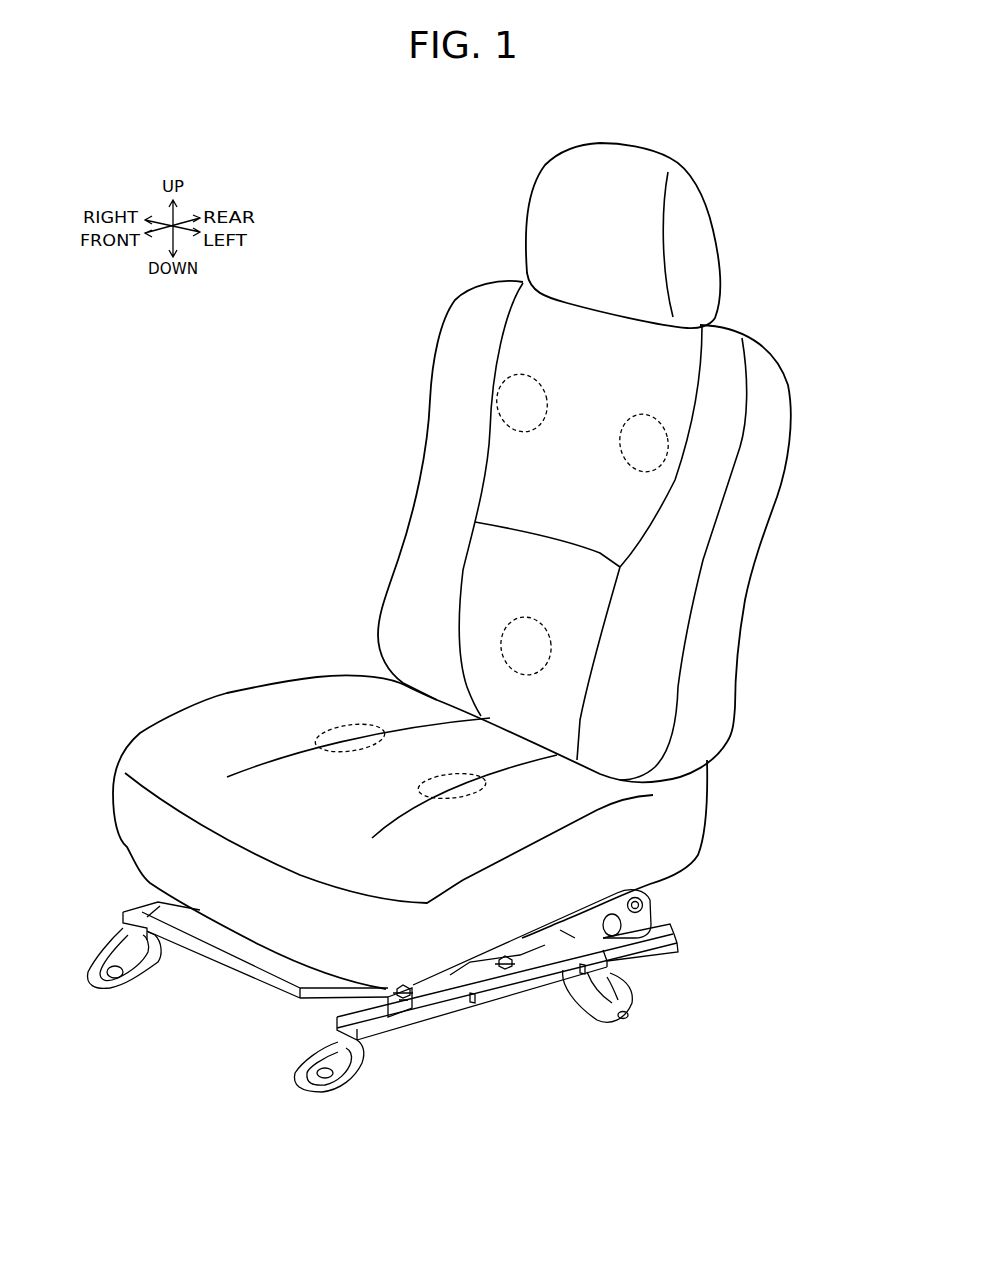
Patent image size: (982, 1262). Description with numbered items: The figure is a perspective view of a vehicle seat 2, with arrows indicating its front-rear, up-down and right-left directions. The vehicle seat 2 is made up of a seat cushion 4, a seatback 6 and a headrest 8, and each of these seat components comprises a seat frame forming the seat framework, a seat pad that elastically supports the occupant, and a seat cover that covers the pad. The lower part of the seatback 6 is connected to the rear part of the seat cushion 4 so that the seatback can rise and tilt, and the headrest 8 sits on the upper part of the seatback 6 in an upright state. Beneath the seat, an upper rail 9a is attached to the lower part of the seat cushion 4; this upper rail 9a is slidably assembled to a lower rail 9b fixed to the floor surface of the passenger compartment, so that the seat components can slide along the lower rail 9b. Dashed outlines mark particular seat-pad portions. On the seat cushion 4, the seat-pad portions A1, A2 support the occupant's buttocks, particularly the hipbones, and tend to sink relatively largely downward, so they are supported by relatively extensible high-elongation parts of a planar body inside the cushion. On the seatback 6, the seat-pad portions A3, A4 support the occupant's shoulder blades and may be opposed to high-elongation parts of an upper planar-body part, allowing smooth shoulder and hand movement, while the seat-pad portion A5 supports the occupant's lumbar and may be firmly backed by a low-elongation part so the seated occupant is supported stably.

The vehicle seat 2 is at (756, 268).
The seat cushion 4 is at (223, 692).
The seatback 6 is at (427, 443).
The headrest 8 is at (523, 229).
The upper rail 9a is at (660, 922).
The lower rail 9b is at (617, 983).
The seat-pad portion A1 is at (350, 753).
The seat-pad portion A2 is at (450, 802).
The seat-pad portion A3 is at (535, 432).
The seat-pad portion A4 is at (627, 452).
The seat-pad portion A5 is at (527, 616).